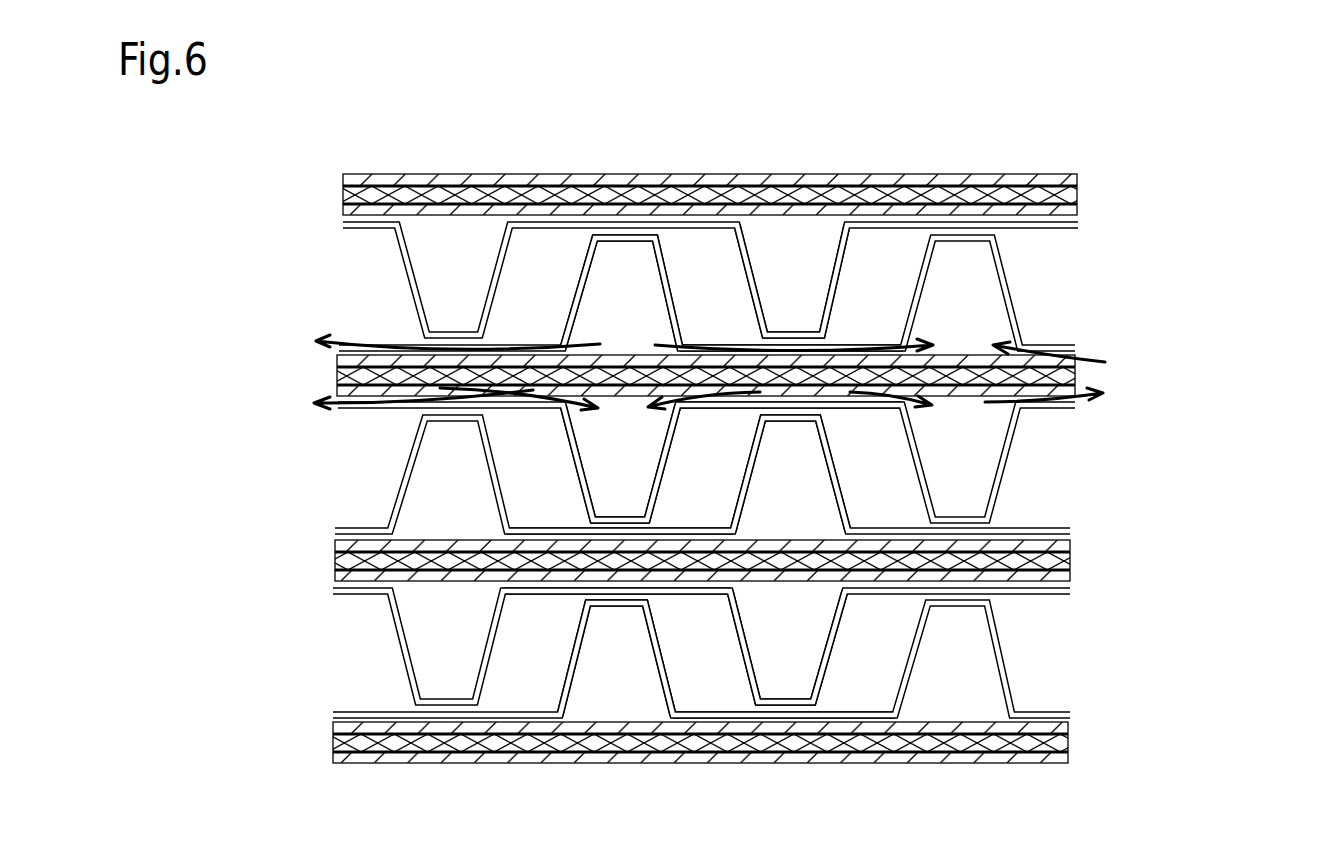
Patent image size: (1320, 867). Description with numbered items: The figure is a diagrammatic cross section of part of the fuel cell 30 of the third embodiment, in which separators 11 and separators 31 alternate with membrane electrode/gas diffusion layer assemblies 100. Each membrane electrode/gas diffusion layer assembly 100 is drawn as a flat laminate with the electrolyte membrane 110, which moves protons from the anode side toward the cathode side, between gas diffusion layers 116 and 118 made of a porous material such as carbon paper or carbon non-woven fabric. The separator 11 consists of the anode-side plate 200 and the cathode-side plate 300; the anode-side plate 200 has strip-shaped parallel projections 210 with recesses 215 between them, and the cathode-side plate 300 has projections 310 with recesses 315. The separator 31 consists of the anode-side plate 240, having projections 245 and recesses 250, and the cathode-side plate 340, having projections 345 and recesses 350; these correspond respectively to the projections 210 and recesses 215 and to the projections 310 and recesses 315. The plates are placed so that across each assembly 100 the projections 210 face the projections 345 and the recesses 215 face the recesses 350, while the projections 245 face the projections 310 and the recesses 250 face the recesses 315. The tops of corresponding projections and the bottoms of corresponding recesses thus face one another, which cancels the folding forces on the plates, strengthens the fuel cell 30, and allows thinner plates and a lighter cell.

The fuel cell 30 is at (1068, 132).
The membrane electrode/gas diffusion layer assembly 100 is at (803, 442).
The gas diffusion layer 118 is at (1079, 180).
The electrolyte membrane 110 is at (1079, 196).
The gas diffusion layer 116 is at (793, 476).
The separator 11 is at (1142, 238).
The separator 31 is at (1137, 422).
The anode-side plate 200 is at (733, 463).
The projections 210 is at (792, 332).
The recesses 215 is at (700, 594).
The cathode-side plate 300 is at (734, 478).
The projections 310 is at (620, 241).
The recesses 315 is at (717, 344).
The anode-side plate 240 is at (736, 462).
The projections 245 is at (618, 517).
The recesses 250 is at (713, 409).
The cathode-side plate 340 is at (731, 475).
The projections 345 is at (788, 422).
The recesses 350 is at (530, 527).